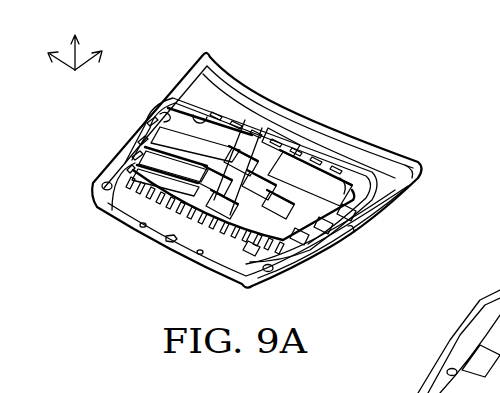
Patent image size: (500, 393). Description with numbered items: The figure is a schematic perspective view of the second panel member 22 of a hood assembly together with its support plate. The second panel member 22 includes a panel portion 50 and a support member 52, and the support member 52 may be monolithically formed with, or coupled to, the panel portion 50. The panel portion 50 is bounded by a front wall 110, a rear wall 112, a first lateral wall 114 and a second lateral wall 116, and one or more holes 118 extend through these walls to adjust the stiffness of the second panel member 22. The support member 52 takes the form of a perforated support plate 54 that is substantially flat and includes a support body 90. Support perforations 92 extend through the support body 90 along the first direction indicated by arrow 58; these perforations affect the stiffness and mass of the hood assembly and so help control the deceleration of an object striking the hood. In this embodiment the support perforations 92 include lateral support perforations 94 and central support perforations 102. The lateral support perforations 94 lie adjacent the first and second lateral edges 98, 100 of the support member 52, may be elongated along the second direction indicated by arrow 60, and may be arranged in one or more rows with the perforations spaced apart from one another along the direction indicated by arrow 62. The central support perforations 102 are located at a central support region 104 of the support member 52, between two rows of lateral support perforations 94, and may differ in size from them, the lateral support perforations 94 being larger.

The second panel member 22 is at (340, 244).
The panel portion 50 is at (408, 200).
The support member 52 is at (282, 188).
The perforated support plate 54 is at (247, 128).
The arrow indicating first direction 58 is at (77, 52).
The arrow indicating second direction 60 is at (66, 68).
The arrow indicating first direction 62 is at (88, 66).
The support body 90 is at (160, 224).
The support perforations 92 is at (198, 110).
The lateral support perforations 94 is at (166, 113).
The first lateral edge 98 is at (145, 128).
The second lateral edge 100 is at (346, 240).
The central support perforations 102 is at (258, 128).
The central support region 104 is at (184, 212).
The front wall 110 is at (247, 277).
The rear wall 112 is at (380, 166).
The first lateral wall 114 is at (288, 242).
The second lateral wall 116 is at (96, 184).
The holes 118 is at (132, 184).